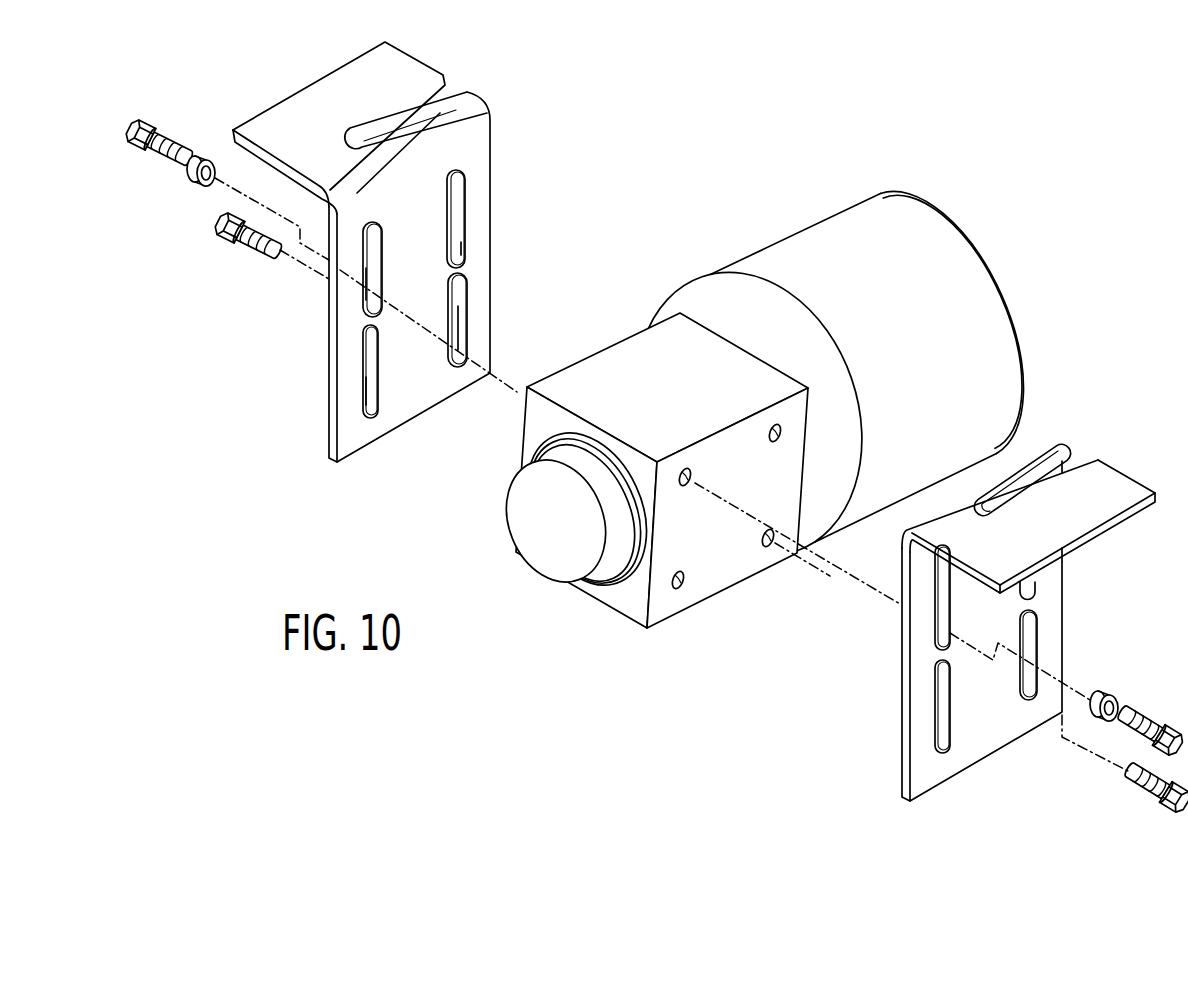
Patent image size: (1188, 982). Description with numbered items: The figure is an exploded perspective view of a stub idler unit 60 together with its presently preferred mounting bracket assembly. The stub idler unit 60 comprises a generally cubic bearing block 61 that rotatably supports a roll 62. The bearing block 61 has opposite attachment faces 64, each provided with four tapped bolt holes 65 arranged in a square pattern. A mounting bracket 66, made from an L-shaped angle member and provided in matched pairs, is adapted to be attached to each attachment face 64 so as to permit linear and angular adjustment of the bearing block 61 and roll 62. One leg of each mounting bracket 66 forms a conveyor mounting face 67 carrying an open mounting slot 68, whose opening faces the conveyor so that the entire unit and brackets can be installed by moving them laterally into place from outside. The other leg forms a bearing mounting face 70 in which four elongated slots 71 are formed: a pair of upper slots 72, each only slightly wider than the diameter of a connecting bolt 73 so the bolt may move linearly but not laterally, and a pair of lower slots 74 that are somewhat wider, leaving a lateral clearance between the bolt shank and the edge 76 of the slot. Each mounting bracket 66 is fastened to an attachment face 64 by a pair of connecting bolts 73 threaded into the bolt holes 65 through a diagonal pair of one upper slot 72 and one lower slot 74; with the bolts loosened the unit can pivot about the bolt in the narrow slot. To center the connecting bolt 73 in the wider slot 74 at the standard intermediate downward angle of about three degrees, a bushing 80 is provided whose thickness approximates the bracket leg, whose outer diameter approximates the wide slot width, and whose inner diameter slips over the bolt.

The stub idler unit 60 is at (791, 176).
The bearing block 61 is at (666, 398).
The roll 62 is at (912, 223).
The attachment face 64 is at (723, 568).
The tapped bolt holes 65 is at (686, 488).
The mounting bracket 66 is at (492, 95).
The conveyor mounting face 67 is at (305, 109).
The open mounting slot 68 is at (451, 89).
The bearing mounting face 70 is at (407, 405).
The elongated slots 71 is at (448, 225).
The upper slots 72 is at (457, 342).
The connecting bolt 73 is at (168, 134).
The lower slots 74 is at (456, 196).
The edge of the slot 76 is at (461, 242).
The bushing 80 is at (185, 177).